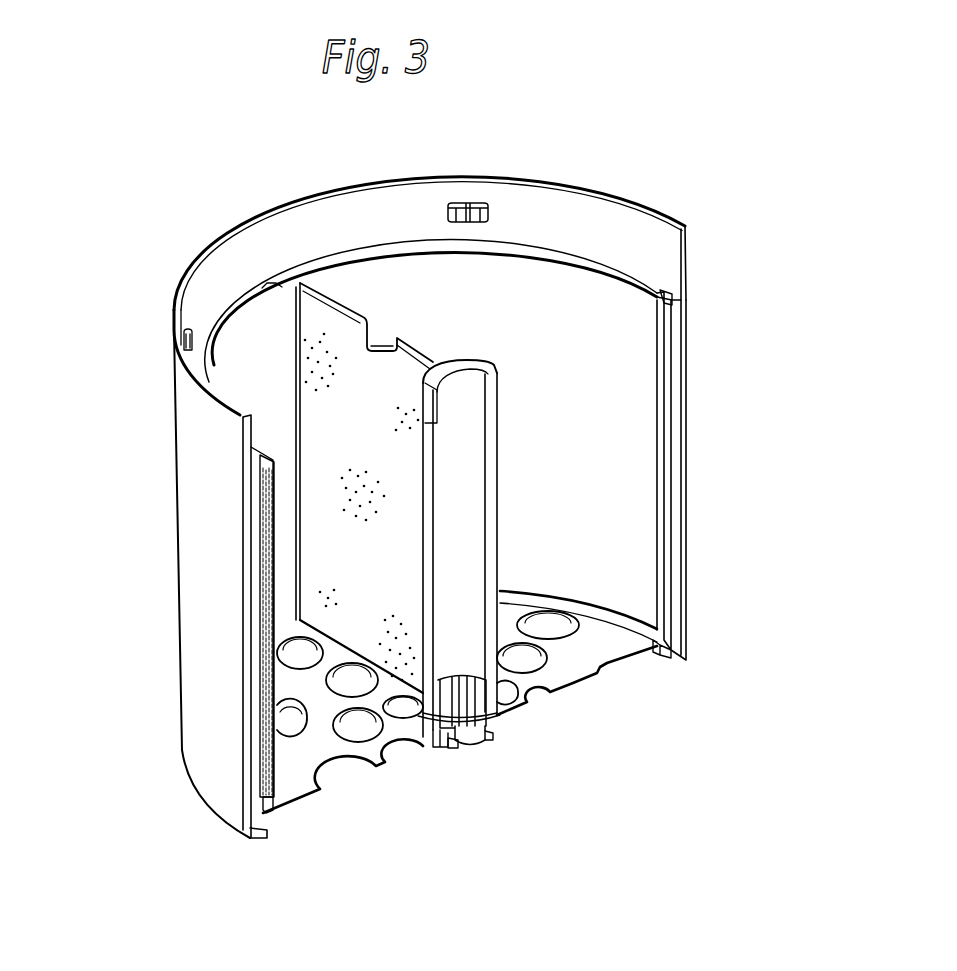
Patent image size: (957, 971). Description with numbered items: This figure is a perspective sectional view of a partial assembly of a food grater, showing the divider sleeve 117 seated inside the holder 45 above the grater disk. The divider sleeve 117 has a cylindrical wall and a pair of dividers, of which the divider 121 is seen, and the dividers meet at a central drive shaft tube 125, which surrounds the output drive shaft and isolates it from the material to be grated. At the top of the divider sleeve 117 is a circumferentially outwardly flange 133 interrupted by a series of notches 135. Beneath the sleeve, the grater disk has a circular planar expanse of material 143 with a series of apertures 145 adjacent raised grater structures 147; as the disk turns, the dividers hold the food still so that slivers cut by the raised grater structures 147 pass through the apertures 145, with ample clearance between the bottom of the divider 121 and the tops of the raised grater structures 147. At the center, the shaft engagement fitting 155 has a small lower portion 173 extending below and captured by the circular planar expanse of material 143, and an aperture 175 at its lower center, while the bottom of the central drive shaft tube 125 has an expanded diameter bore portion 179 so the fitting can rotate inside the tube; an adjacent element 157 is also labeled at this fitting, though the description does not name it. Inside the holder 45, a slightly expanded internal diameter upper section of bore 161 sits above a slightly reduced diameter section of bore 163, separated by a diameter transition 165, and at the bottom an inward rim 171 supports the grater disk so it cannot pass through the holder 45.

The holder 45 is at (185, 617).
The divider sleeve 117 is at (592, 380).
The divider 121 is at (353, 512).
The central drive shaft tube 125 is at (474, 440).
The circumferentially outwardly flange 133 is at (573, 260).
The notches 135 is at (287, 275).
The circular planar expanse of material 143 is at (572, 660).
The apertures 145 is at (358, 727).
The raised grater structures 147 is at (580, 606).
The shaft engagement fitting 155 is at (442, 748).
The ribbed hub 157 is at (484, 737).
The slightly expanded internal diameter upper section of bore 161 is at (653, 237).
The slightly reduced diameter section of bore 163 is at (664, 342).
The diameter transition 165 is at (470, 203).
The inward rim 171 is at (275, 815).
The small lower portion 173 is at (490, 740).
The aperture 175 is at (470, 745).
The expanded diameter bore portion 179 is at (494, 716).